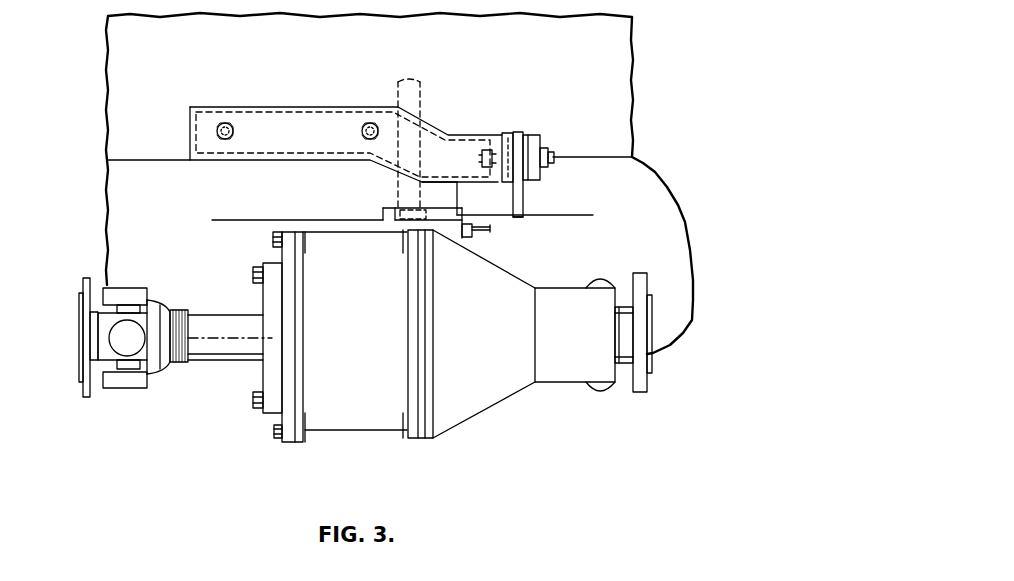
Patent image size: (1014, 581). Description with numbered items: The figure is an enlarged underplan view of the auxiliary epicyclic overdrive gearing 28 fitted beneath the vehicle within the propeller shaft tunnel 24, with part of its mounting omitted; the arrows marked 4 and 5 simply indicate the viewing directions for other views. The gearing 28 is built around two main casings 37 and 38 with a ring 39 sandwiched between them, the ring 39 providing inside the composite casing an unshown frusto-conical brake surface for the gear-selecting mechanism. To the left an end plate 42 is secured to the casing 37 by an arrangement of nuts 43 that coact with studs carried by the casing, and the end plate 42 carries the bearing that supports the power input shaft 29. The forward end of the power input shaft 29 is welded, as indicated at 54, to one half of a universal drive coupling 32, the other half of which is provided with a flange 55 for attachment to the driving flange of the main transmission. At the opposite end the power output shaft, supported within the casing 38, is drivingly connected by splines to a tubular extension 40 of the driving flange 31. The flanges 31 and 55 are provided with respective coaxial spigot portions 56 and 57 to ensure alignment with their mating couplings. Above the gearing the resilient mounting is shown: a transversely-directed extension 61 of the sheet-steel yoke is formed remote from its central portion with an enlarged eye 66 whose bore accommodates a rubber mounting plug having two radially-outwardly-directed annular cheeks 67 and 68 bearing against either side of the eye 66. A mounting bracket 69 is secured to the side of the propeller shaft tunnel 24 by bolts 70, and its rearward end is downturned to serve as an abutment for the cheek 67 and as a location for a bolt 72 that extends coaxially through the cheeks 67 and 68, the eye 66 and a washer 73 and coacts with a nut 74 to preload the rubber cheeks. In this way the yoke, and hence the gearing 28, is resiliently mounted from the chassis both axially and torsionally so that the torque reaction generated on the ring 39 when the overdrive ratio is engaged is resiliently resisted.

The direction arrow / drive input side 4 is at (75, 338).
The direction arrow / output side 5 is at (692, 331).
The propeller shaft tunnel 24 is at (153, 100).
The auxiliary epicyclic overdrive gearing 28 is at (343, 445).
The power input shaft 29 is at (230, 323).
The driving flange 31 is at (639, 290).
The universal drive coupling 32 is at (140, 349).
The main casing 37 is at (358, 342).
The main casing 38 is at (509, 342).
The ring 39 is at (418, 381).
The tubular extension 40 is at (621, 306).
The end plate 42 is at (270, 364).
The nuts 43 is at (272, 238).
The weld 54 is at (183, 362).
The flange 55 is at (87, 377).
The spigot portion 56 is at (649, 308).
The spigot portion 57 is at (83, 367).
The transversely-directed extension 61 is at (523, 207).
The enlarged eye 66 is at (518, 153).
The annular cheek 67 is at (506, 152).
The annular cheek 68 is at (529, 147).
The mounting bracket 69 is at (392, 150).
The bolts 70 is at (225, 121).
The bolt 72 is at (480, 157).
The washer 73 is at (544, 143).
The nut 74 is at (553, 154).